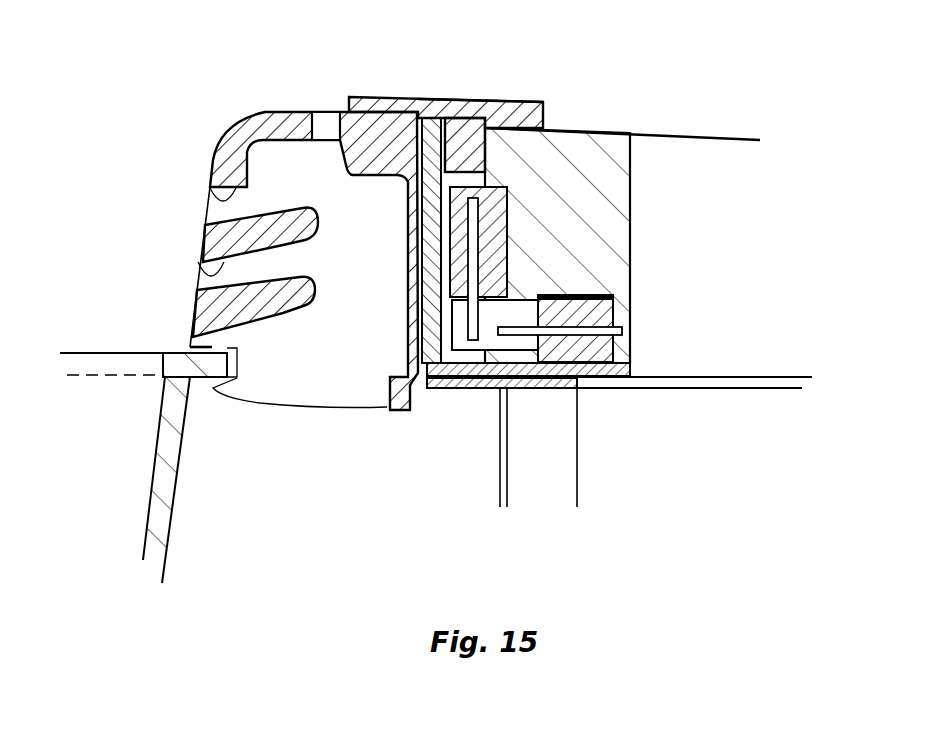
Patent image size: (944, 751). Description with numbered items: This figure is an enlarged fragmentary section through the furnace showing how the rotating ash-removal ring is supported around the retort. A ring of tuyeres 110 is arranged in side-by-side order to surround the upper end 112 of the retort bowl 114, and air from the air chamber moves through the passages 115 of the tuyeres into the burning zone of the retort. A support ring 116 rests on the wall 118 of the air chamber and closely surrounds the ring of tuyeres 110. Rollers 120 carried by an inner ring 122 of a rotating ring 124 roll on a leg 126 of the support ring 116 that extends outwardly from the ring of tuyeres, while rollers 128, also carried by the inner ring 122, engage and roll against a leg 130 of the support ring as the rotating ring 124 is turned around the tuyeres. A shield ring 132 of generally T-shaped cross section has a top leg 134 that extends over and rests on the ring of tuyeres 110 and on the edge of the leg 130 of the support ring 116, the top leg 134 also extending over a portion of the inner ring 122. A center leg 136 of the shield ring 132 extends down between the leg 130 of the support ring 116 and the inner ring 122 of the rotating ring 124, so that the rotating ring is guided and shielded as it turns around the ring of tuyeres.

The tuyeres 110 is at (290, 110).
The upper end of retort bowl 112 is at (177, 352).
The retort bowl 114 is at (177, 513).
The passages 115 is at (200, 268).
The support ring 116 is at (632, 368).
The wall of air chamber 118 is at (508, 443).
The rollers 120 is at (614, 300).
The inner ring 122 is at (622, 243).
The rotating ring 124 is at (753, 360).
The leg of support ring 126 is at (460, 390).
The rollers 128 is at (452, 264).
The leg of support ring 130 is at (425, 327).
The shield ring 132 is at (450, 97).
The top leg 134 is at (511, 100).
The center leg 136 is at (460, 158).